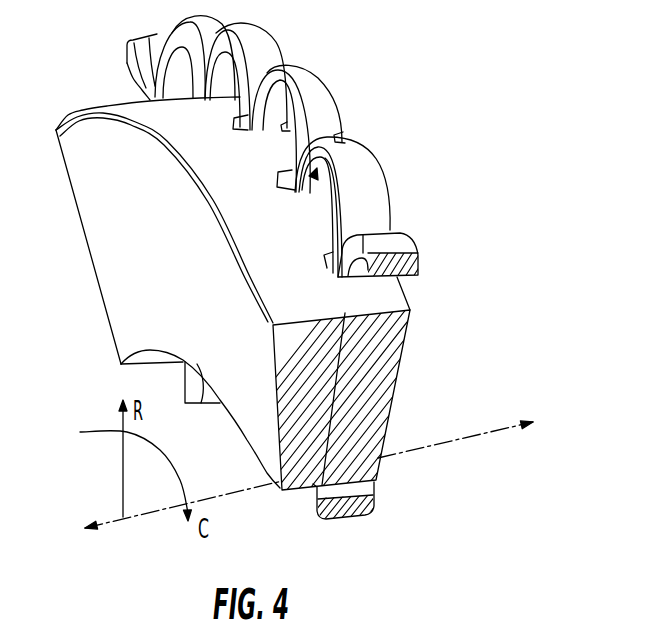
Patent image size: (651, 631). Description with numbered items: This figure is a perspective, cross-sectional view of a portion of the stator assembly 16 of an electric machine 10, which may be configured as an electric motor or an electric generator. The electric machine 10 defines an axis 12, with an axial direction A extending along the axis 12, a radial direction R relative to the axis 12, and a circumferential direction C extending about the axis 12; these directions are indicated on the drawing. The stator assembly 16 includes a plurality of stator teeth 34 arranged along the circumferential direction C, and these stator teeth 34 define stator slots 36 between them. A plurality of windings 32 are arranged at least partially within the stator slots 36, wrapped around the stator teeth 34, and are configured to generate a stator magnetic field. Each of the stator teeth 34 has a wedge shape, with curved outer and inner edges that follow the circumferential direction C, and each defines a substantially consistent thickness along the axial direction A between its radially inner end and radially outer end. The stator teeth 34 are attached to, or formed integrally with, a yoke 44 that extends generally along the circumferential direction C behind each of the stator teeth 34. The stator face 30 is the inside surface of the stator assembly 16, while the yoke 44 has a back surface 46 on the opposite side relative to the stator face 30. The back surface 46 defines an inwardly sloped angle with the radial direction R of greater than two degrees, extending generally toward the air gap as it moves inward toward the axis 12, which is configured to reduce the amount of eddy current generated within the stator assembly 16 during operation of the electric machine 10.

The electric machine 10 is at (467, 628).
The axis 12 is at (503, 430).
The stator assembly 16 is at (455, 62).
The stator face 30 is at (305, 330).
The windings 32 is at (372, 186).
The stator teeth 34 is at (393, 300).
The stator slots 36 is at (318, 170).
The yoke 44 is at (285, 490).
The back surface 46 is at (128, 272).